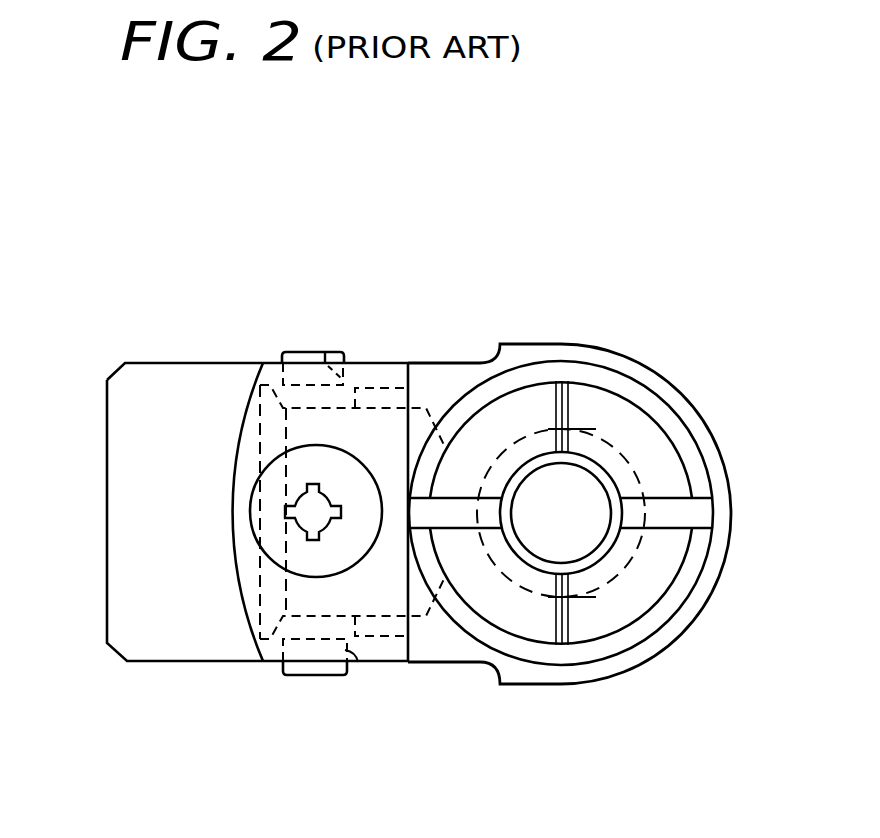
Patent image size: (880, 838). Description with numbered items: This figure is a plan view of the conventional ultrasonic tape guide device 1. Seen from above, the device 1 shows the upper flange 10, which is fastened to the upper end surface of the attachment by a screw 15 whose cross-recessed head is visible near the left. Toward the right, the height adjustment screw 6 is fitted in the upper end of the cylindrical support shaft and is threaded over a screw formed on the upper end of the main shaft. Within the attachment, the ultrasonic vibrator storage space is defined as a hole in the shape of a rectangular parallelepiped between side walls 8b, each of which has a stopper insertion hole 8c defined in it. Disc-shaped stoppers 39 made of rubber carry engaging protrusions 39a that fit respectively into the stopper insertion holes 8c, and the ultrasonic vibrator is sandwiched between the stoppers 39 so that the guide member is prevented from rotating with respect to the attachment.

The ultrasonic tape guide device 1 is at (116, 244).
The height adjustment screw 6 is at (706, 452).
The side walls 8b is at (388, 366).
The stopper insertion holes 8c is at (328, 353).
The upper flange 10 is at (472, 366).
The screw 15 is at (250, 512).
The stoppers 39 is at (282, 354).
The engaging protrusions 39a is at (306, 350).